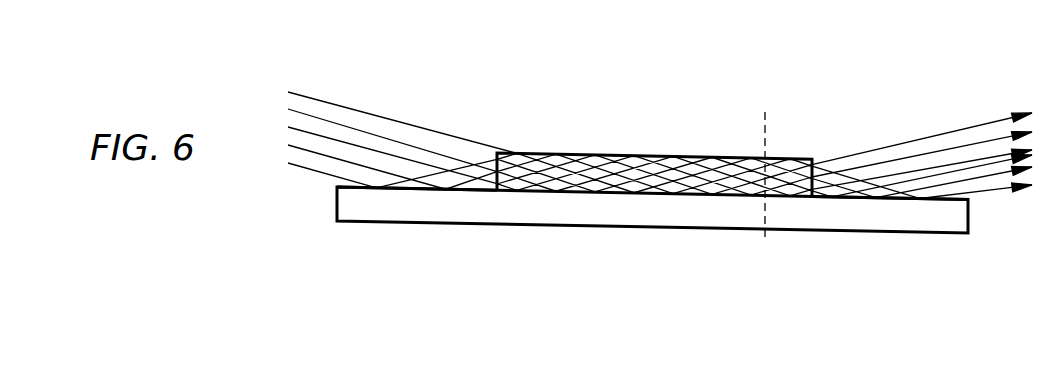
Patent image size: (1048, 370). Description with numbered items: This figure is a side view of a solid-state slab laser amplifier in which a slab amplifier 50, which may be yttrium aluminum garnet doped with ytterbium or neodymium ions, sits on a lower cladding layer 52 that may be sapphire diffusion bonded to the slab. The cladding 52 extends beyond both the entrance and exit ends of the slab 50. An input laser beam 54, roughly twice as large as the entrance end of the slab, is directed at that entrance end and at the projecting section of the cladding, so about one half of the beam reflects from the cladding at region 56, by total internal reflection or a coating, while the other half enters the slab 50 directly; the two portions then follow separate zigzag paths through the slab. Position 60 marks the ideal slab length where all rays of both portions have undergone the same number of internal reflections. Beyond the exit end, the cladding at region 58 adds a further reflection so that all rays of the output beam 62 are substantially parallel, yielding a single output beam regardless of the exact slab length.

The slab amplifier 50 is at (599, 152).
The lower cladding layer 52 is at (555, 227).
The input laser beam 54 is at (331, 104).
The reflection region of cladding 56 is at (397, 188).
The reflection region at exit end 58 is at (922, 200).
The ideal slab length position 60 is at (764, 130).
The output laser beam 62 is at (917, 139).